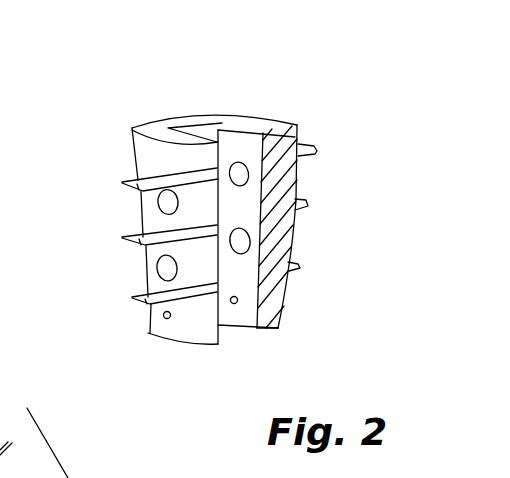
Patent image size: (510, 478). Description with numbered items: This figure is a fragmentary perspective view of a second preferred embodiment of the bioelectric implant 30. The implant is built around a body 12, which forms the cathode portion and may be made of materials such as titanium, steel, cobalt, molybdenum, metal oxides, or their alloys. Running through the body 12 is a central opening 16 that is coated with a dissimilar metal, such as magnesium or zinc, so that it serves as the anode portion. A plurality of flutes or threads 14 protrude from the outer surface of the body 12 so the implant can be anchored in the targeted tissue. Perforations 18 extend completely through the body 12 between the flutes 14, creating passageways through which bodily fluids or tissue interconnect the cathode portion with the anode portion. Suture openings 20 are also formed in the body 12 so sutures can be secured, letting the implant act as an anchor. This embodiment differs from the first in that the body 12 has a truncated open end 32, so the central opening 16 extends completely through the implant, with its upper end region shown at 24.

The body 12 is at (152, 157).
The flutes/threads 14 is at (122, 182).
The central opening 16 is at (230, 138).
The perforations 18 is at (240, 241).
The suture openings 20 is at (165, 318).
The top rim 24 is at (145, 125).
The bioelectric implant 30 is at (209, 236).
The truncated open end 32 is at (238, 325).